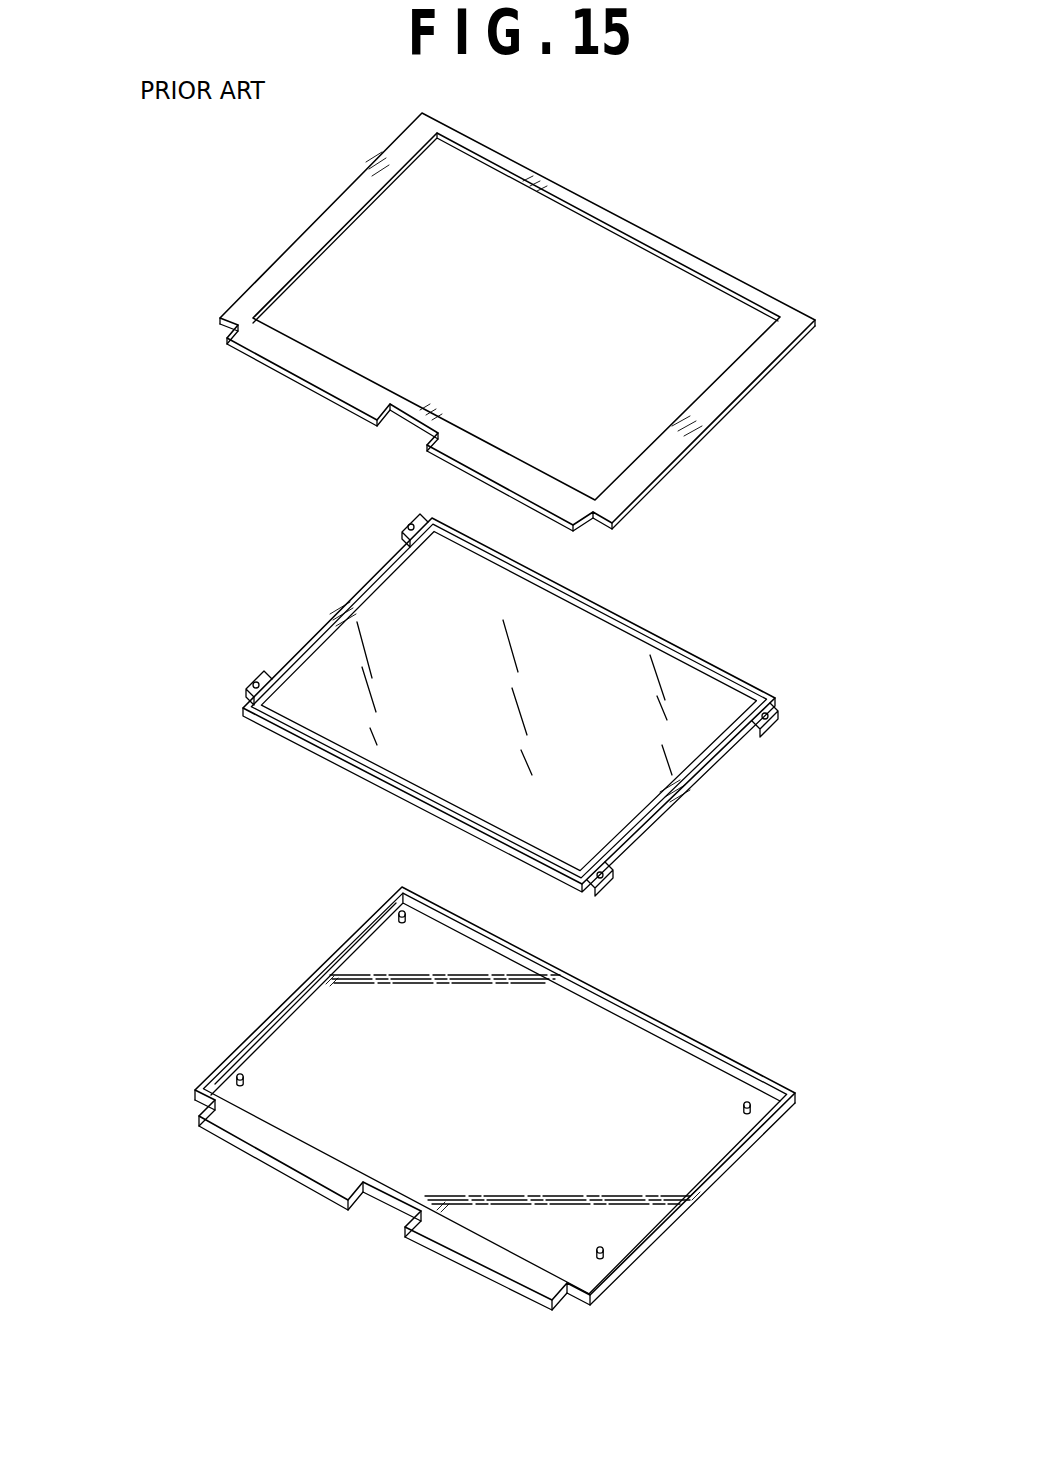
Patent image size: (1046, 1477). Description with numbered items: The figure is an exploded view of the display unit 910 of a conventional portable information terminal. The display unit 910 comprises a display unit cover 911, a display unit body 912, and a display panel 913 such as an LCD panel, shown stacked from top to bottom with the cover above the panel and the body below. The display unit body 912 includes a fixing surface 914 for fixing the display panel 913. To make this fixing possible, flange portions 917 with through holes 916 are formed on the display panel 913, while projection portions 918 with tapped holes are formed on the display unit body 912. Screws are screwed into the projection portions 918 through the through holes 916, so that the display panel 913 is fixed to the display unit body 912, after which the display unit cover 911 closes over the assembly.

The display unit 910 is at (686, 224).
The display unit cover 911 is at (341, 210).
The display unit body 912 is at (278, 1165).
The display panel 913 is at (632, 810).
The fixing surface 914 is at (307, 1028).
The through hole 916 is at (250, 682).
The flange portion 917 is at (397, 532).
The projection portion with tapped hole 918 is at (395, 913).